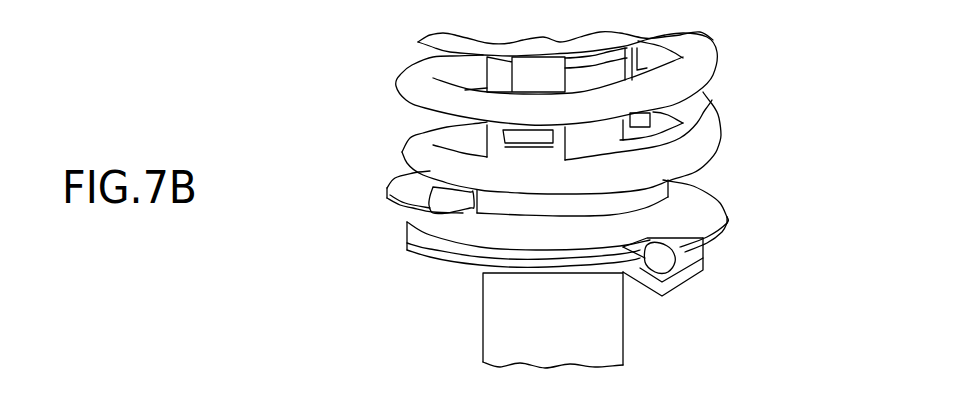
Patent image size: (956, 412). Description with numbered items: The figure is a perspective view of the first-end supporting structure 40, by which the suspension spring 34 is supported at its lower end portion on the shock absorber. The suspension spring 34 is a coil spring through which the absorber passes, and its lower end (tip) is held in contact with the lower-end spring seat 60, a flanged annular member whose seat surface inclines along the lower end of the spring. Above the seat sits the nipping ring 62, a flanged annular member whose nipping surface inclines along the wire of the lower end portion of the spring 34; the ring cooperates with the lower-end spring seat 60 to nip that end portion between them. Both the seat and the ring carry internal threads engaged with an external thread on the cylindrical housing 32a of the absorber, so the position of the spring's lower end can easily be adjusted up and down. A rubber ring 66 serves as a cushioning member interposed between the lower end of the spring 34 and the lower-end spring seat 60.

The suspension spring 34 is at (410, 152).
The nipping ring 62 is at (713, 212).
The rubber ring 66 is at (695, 272).
The lower-end spring seat 60 is at (680, 293).
The cylindrical housing 32a is at (613, 343).
The first-end supporting structure 40 is at (356, 259).